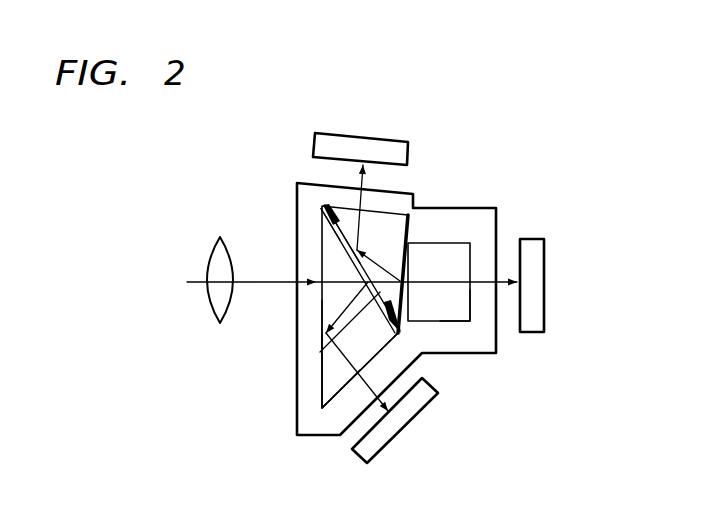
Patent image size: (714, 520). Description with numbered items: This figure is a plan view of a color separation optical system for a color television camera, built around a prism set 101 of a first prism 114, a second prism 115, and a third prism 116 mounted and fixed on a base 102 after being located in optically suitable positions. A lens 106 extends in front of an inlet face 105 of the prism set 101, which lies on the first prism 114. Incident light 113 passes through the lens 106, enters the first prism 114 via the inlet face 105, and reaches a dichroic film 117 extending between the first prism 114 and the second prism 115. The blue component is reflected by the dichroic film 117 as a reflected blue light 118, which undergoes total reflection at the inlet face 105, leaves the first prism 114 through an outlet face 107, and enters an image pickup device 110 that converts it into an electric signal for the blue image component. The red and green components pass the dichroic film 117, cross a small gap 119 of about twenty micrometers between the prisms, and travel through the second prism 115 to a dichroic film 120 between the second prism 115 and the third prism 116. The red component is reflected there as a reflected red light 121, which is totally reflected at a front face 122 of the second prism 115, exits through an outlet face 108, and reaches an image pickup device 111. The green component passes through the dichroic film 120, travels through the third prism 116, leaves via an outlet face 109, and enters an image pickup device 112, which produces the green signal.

The prism set 101 is at (428, 303).
The base 102 is at (483, 211).
The inlet face 105 is at (322, 328).
The lens 106 is at (213, 320).
The outlet face 107 is at (332, 404).
The outlet face 108 is at (394, 210).
The outlet face 109 is at (468, 321).
The image pickup device 110 is at (384, 442).
The image pickup device 111 is at (392, 146).
The image pickup device 112 is at (525, 326).
The incident light 113 is at (263, 280).
The first prism 114 is at (328, 382).
The second prism 115 is at (320, 214).
The third prism 116 is at (450, 250).
The dichroic film 117 is at (337, 226).
The reflected blue light 118 is at (335, 310).
The gap 119 is at (356, 249).
The dichroic film 120 is at (355, 256).
The reflected red light 121 is at (358, 181).
The front face 122 is at (322, 356).